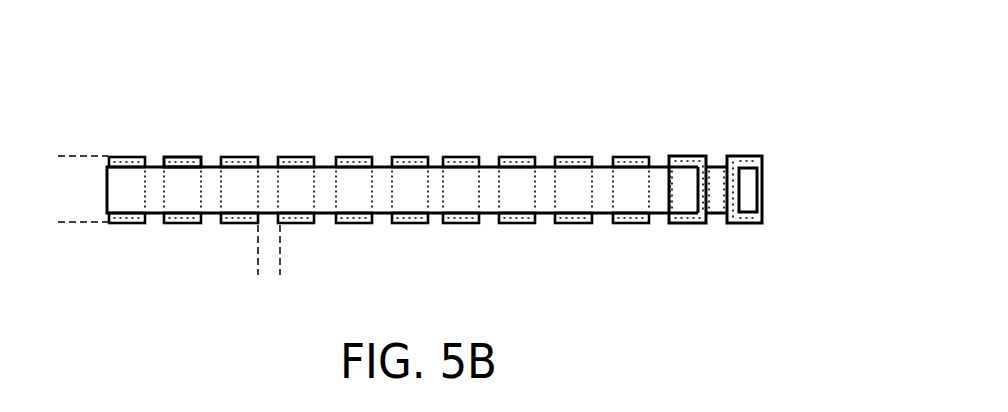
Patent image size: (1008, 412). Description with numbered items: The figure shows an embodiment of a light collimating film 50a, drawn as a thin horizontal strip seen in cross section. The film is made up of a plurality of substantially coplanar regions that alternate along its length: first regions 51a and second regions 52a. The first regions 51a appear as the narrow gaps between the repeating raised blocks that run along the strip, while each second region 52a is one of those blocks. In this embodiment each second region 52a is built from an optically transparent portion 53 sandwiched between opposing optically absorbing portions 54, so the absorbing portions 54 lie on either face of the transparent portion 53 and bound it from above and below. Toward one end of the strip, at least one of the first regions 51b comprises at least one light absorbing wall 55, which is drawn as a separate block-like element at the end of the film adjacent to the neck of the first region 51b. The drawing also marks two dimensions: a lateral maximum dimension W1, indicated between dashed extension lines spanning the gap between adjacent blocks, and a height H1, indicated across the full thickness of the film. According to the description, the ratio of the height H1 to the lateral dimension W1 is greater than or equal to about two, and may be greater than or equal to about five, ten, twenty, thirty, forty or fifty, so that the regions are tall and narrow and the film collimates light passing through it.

The light collimating film 50a is at (499, 193).
The first region 51a is at (154, 157).
The first region 51b is at (714, 220).
The second region 52a is at (189, 145).
The optically transparent portion 53 is at (630, 190).
The optically absorbing portion 54 is at (623, 156).
The light absorbing wall 55 is at (731, 193).
The height H1 is at (71, 160).
The lateral maximum dimension W1 is at (233, 262).